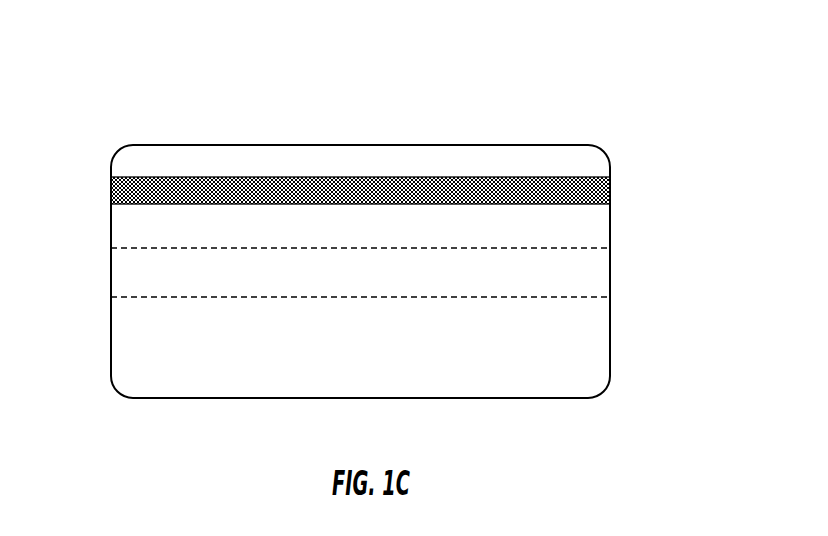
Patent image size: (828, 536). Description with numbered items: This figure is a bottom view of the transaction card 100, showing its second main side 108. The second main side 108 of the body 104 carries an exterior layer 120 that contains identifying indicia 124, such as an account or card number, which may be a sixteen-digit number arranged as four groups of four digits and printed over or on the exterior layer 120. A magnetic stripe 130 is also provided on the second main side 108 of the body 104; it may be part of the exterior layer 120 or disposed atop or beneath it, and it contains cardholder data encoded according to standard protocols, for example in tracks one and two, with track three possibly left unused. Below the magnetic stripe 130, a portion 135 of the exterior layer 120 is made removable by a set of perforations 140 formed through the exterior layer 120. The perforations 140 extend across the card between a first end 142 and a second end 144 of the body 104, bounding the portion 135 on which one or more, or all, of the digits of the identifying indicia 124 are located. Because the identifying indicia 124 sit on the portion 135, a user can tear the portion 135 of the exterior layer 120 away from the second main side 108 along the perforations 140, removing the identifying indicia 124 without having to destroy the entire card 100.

The transaction card 100 is at (131, 90).
The body 104 is at (478, 136).
The second main side 108 is at (519, 386).
The exterior layer 120 is at (604, 229).
The identifying indicia 124 is at (573, 267).
The magnetic stripe 130 is at (612, 190).
The portion 135 is at (371, 268).
The perforations 140 is at (130, 248).
The first end 142 is at (111, 322).
The second end 144 is at (609, 352).